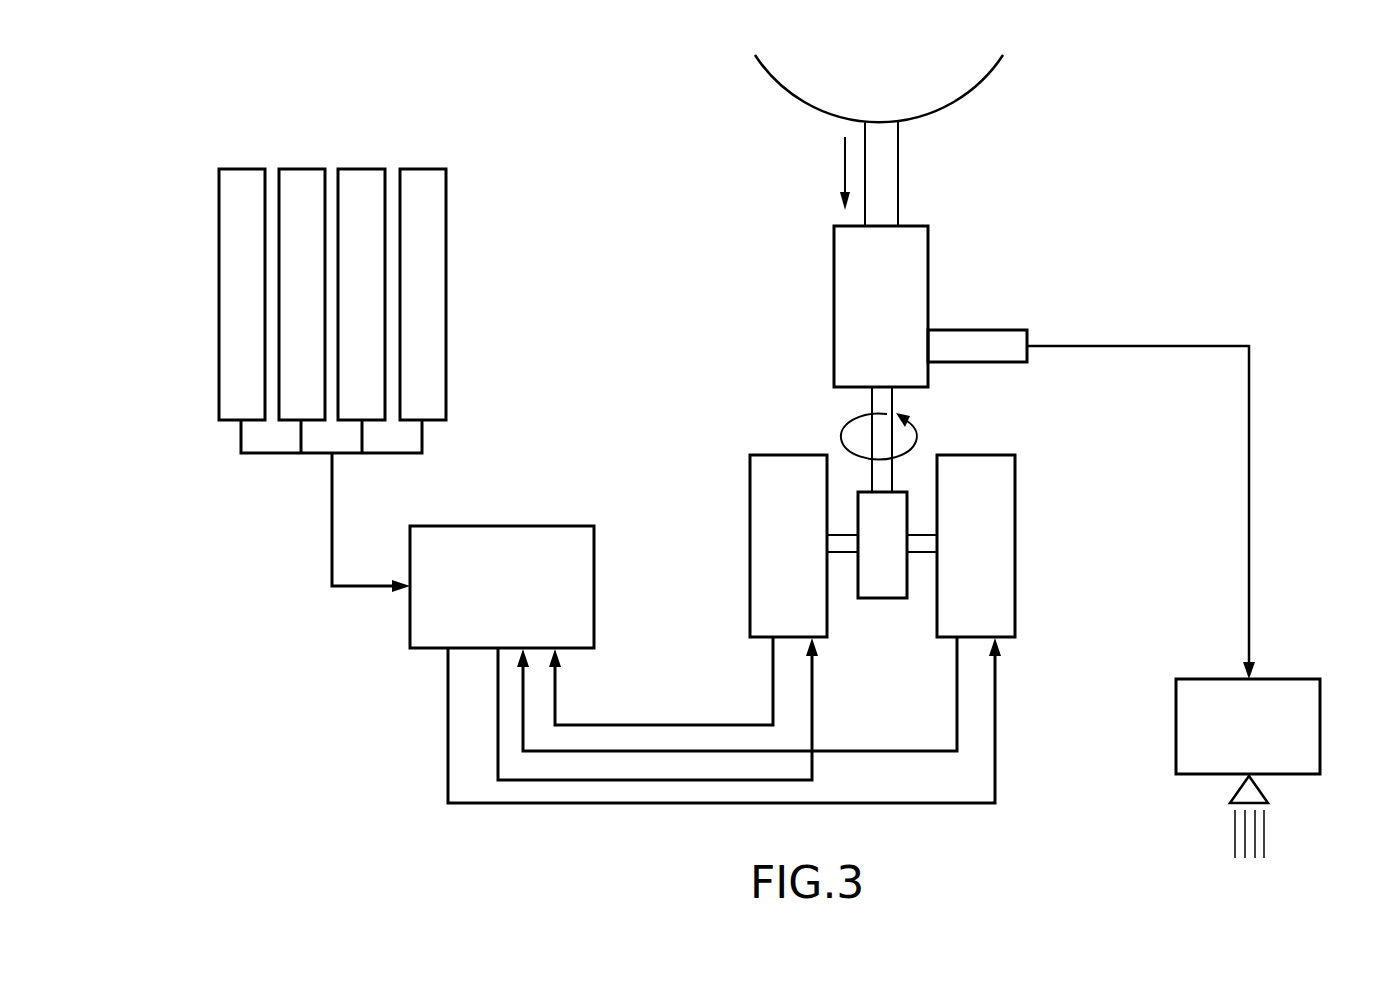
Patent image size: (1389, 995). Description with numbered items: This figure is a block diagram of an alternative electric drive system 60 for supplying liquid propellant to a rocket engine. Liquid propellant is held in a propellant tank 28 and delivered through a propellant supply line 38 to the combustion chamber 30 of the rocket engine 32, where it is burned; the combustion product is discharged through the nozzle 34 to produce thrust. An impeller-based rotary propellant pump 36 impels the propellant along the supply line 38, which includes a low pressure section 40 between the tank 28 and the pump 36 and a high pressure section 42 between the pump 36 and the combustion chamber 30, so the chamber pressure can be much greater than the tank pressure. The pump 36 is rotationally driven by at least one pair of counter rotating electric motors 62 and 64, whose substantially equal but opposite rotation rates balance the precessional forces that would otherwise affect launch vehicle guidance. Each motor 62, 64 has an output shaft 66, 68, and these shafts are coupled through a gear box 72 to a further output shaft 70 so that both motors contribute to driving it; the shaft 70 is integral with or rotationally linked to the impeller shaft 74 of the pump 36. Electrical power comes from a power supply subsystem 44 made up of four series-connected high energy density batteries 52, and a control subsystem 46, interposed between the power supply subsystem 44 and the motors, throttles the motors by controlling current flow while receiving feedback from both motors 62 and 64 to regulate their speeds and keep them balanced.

The propellant tank 28 is at (894, 98).
The combustion chamber 30 is at (1322, 740).
The rocket engine 32 is at (1281, 713).
The nozzle 34 is at (1236, 785).
The propellant pump 36 is at (929, 256).
The propellant supply line 38 is at (992, 118).
The low pressure section 40 is at (899, 168).
The high pressure section 42 is at (963, 330).
The power supply subsystem 44 is at (373, 341).
The control subsystem 46 is at (570, 470).
The high energy density batteries 52 is at (437, 168).
The electric drive system 60 is at (1113, 163).
The electric motor 62 is at (750, 537).
The electric motor 64 is at (1016, 578).
The output shaft 66 is at (840, 534).
The output shaft 68 is at (925, 534).
The further output shaft 70 is at (893, 466).
The gear box 72 is at (881, 599).
The impeller shaft 74 is at (872, 400).